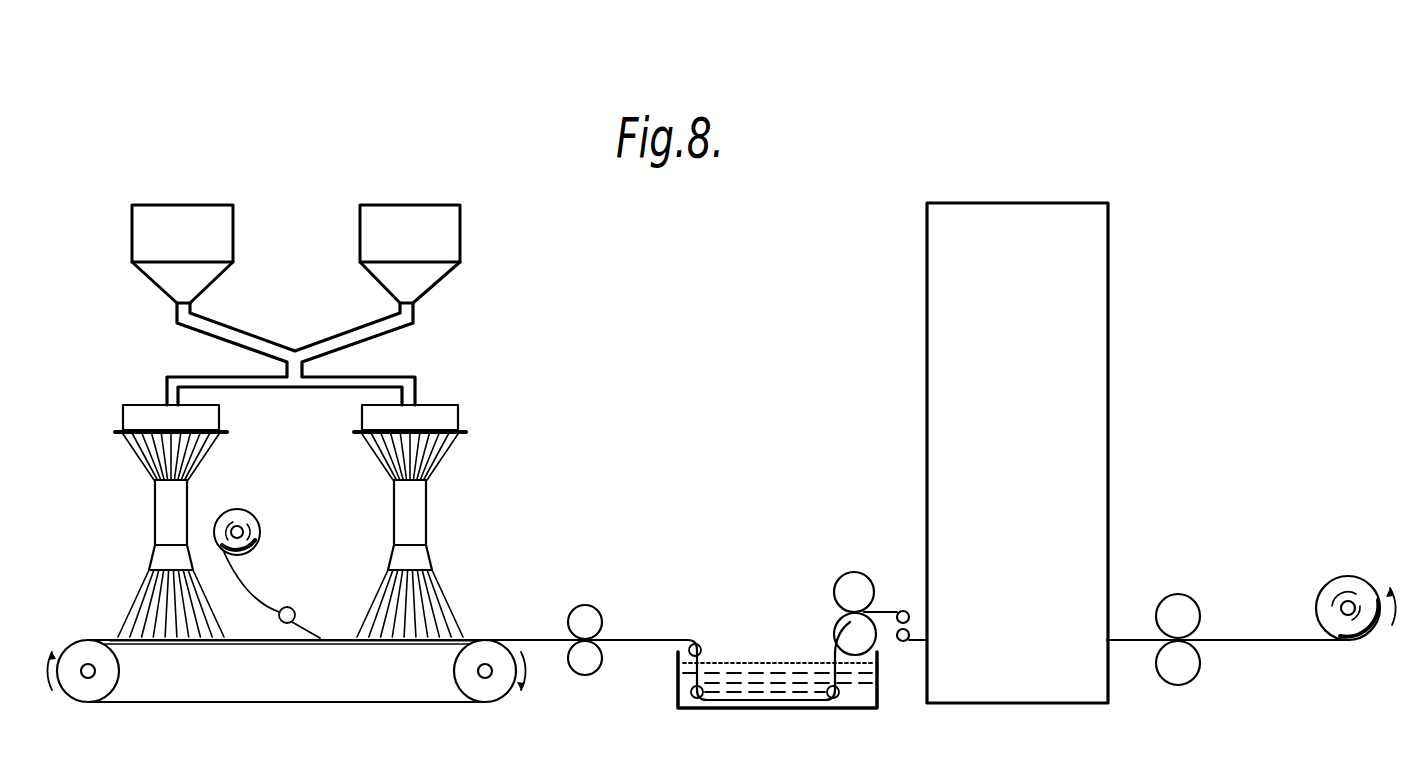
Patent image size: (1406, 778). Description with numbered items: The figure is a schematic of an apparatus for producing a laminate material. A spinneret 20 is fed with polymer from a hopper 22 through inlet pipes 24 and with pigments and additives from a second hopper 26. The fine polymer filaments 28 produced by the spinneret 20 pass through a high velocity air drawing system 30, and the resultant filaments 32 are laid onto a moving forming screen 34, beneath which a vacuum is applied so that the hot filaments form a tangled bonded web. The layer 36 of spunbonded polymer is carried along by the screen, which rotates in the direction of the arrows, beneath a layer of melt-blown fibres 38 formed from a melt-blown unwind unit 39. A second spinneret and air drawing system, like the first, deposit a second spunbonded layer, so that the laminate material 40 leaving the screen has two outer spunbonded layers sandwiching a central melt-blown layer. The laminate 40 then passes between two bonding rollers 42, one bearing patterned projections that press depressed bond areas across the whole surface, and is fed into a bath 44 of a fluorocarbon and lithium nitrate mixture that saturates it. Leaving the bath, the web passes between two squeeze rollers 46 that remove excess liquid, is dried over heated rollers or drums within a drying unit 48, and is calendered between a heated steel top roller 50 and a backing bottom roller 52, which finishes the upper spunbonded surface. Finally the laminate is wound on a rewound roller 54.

The spinneret 20 is at (127, 404).
The hopper 22 is at (223, 225).
The inlet pipes 24 is at (258, 342).
The second hopper 26 is at (442, 217).
The fine polymer filaments 28 is at (137, 452).
The high velocity air drawing system 30 is at (163, 515).
The resultant filaments 32 is at (150, 607).
The moving forming screen 34 is at (84, 639).
The layer of spunbonded polymer 36 is at (240, 637).
The layer of melt-blown fibres 38 is at (262, 593).
The melt-blown unwind unit 39 is at (243, 507).
The laminate material 40 is at (495, 640).
The bonding rollers 42 is at (597, 663).
The bath 44 is at (745, 665).
The squeeze rollers 46 is at (845, 635).
The drying unit 48 is at (940, 500).
The top roller 50 is at (1177, 602).
The bottom roller 52 is at (1168, 672).
The rewound roller 54 is at (1350, 641).